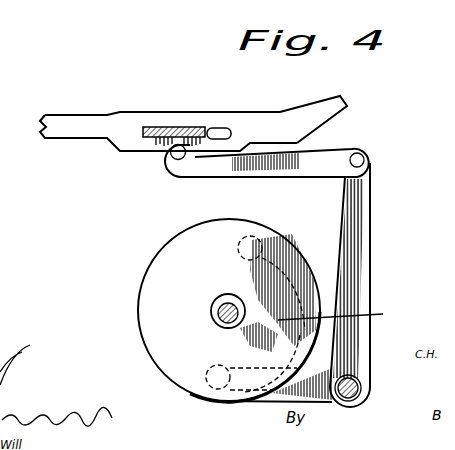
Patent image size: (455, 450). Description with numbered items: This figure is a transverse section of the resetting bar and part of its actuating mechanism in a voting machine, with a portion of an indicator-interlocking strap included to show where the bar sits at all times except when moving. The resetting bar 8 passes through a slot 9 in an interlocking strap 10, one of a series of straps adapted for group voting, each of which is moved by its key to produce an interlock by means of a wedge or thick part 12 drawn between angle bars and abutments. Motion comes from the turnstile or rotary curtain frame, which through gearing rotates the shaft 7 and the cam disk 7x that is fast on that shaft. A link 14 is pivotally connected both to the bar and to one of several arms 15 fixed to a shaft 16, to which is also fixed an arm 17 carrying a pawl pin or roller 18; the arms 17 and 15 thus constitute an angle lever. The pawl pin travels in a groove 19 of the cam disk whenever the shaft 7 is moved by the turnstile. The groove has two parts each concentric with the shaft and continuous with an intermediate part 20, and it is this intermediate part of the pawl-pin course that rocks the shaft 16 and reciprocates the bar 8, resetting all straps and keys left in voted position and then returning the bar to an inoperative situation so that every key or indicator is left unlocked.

The shaft 7 is at (227, 300).
The cam disk 7x is at (225, 310).
The resetting bar 8 is at (174, 128).
The slot 9 is at (224, 128).
The interlocking strap 10 is at (148, 103).
The wedge 12 is at (328, 108).
The link 14 is at (265, 174).
The arm 15 is at (372, 231).
The shaft 16 is at (366, 390).
The arm 17 is at (323, 404).
The pawl pin 18 is at (206, 398).
The groove 19 is at (252, 384).
The intermediate part 20 is at (343, 315).